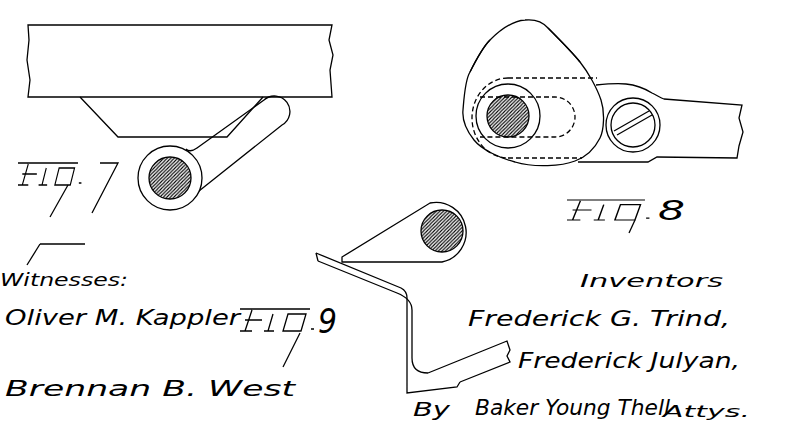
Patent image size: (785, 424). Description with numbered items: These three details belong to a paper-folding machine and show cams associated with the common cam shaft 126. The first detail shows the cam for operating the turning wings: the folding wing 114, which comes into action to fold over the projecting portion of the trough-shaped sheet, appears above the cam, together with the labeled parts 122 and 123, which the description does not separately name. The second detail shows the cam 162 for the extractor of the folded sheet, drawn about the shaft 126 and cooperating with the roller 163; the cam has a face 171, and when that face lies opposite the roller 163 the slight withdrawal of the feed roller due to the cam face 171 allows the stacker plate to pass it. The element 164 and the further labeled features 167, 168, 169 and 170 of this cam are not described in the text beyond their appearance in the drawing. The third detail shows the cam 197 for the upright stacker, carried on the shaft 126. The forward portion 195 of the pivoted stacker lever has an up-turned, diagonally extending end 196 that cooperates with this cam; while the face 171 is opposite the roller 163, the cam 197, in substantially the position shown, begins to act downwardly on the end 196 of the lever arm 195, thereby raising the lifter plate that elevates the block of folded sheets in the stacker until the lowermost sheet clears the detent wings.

In FIG. 7, the folding wing 114 is at (180, 61).
In FIG. 7, the bracket 123 is at (171, 117).
In FIG. 7, the arm 122 is at (266, 135).
In FIG. 7, the shaft 126 is at (186, 188).
In FIG. 8, the shaft 126 is at (492, 117).
In FIG. 9, the shaft 126 is at (457, 240).
In FIG. 8, the cam 162 is at (533, 93).
In FIG. 8, the roller 163 is at (643, 103).
In FIG. 8, the lever arm 164 is at (660, 123).
In FIG. 8, the recess upper edge 167 is at (588, 78).
In FIG. 8, the recess lower edge 168 is at (531, 167).
In FIG. 8, the recess 169 is at (480, 143).
In FIG. 8, the cam edge 170 is at (478, 65).
In FIG. 8, the cam face 171 is at (557, 48).
In FIG. 9, the forward portion of the lever 195 is at (469, 361).
In FIG. 9, the up-turned diagonally-extending end 196 is at (388, 323).
In FIG. 9, the cam 197 is at (404, 232).